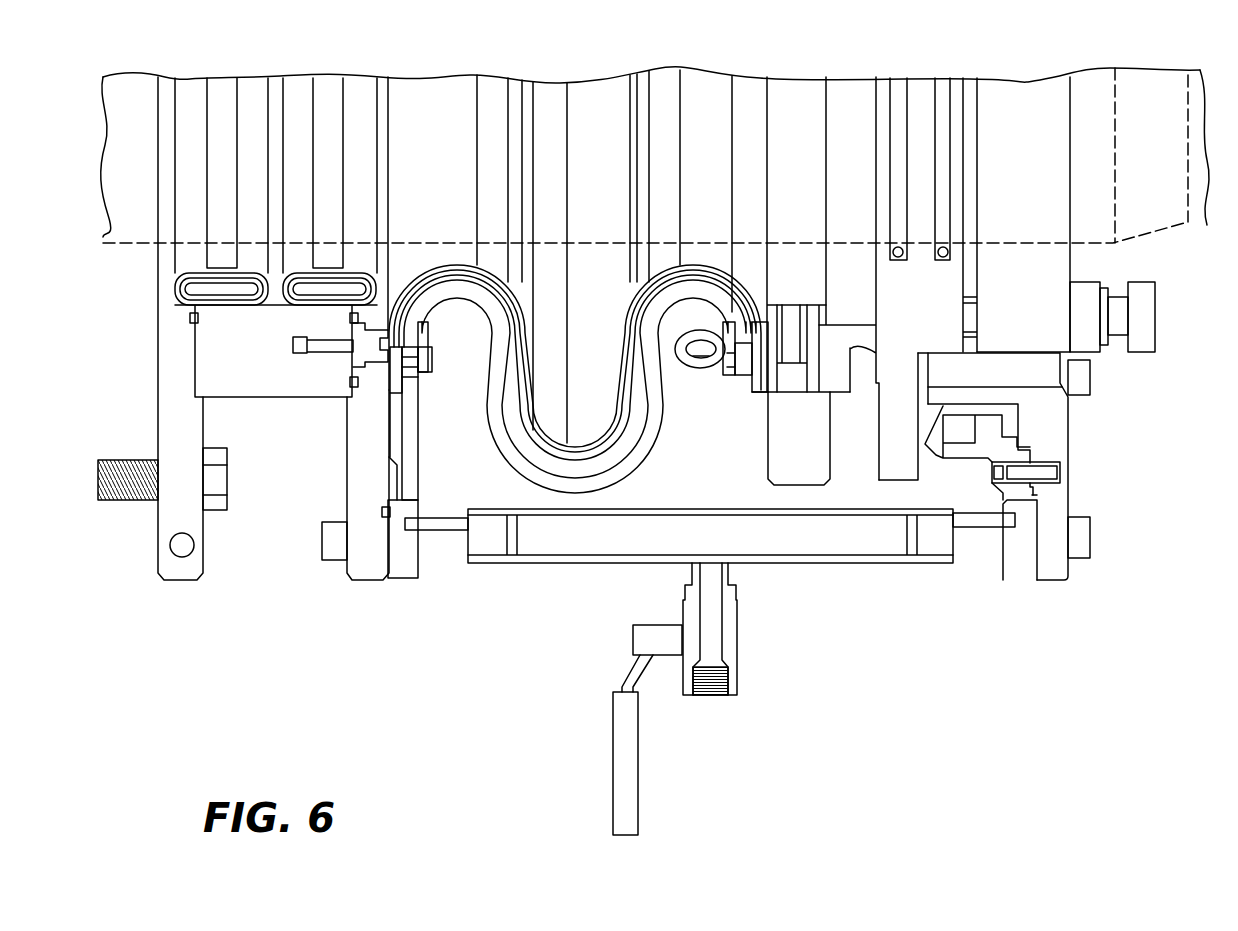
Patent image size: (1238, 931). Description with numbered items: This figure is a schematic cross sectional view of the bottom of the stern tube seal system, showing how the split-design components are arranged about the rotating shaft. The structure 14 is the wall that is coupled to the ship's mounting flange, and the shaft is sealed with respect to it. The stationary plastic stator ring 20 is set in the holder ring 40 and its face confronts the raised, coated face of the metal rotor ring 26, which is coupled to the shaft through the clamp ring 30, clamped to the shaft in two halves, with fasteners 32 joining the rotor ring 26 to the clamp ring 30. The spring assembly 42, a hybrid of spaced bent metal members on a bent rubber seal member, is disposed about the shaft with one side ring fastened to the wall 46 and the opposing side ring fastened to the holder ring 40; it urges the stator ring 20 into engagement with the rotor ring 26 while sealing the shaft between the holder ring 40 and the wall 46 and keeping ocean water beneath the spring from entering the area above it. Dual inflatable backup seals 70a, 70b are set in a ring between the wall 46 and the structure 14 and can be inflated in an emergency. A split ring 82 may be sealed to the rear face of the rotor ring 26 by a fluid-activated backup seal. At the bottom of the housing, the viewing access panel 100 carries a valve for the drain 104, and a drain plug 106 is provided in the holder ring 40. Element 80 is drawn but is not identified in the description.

The structure 14 is at (174, 563).
The stator ring 20 is at (840, 368).
The rotor ring 26 is at (902, 420).
The clamp ring 30 is at (1030, 264).
The fasteners 32 is at (1157, 328).
The holder ring 40 is at (811, 185).
The spring assembly 42 is at (672, 425).
The wall 46 is at (370, 565).
The inflatable backup seal 70a is at (223, 307).
The inflatable backup seal 70b is at (325, 307).
The block 80 is at (982, 467).
The split ring 82 is at (1075, 440).
The bottom housing viewing access panel 100 is at (532, 563).
The drain 104 is at (712, 690).
The drain plug 106 is at (793, 373).